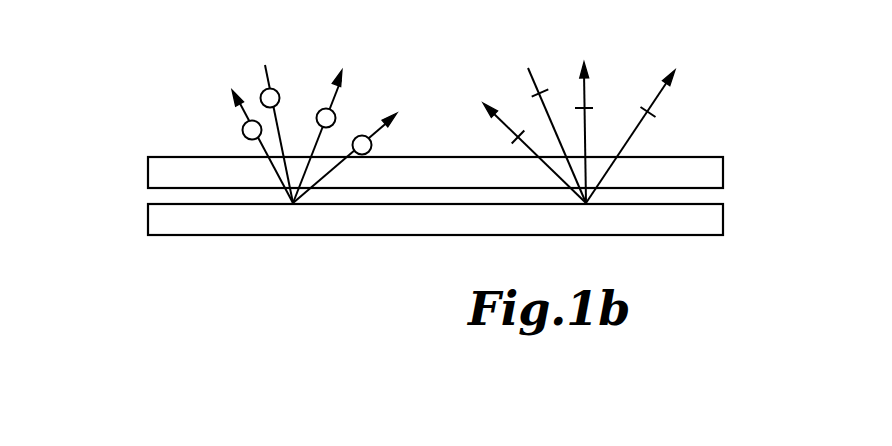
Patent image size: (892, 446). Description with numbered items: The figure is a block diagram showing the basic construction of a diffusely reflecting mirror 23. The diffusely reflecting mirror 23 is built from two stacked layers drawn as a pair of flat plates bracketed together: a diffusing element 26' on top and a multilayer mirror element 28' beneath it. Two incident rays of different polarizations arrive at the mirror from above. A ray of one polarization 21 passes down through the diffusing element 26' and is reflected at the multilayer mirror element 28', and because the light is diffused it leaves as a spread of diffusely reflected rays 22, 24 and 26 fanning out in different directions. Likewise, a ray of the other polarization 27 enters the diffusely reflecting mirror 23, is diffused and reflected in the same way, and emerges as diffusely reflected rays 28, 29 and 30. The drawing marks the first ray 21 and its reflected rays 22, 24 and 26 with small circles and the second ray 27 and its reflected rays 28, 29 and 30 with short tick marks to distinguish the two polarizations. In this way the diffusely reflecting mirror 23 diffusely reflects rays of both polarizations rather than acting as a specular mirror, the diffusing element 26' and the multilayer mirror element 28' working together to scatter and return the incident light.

The ray of first polarization 21 is at (265, 77).
The diffusely reflected ray 22 is at (239, 116).
The diffusely reflecting mirror 23 is at (370, 197).
The diffusely reflected ray 24 is at (325, 103).
The diffusely reflected ray 26 is at (365, 158).
The diffusing element 26' is at (402, 172).
The ray of second polarization 27 is at (531, 82).
The diffusely reflected ray 28 is at (523, 153).
The multilayer mirror element 28' is at (402, 219).
The diffusely reflected ray 29 is at (587, 97).
The diffusely reflected ray 30 is at (653, 105).